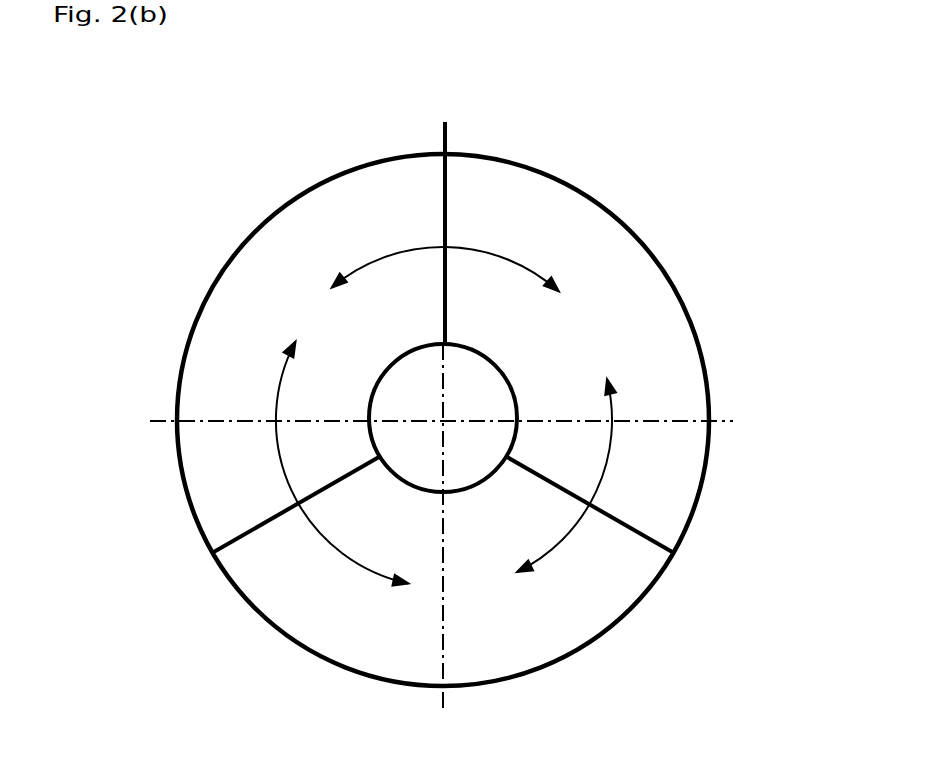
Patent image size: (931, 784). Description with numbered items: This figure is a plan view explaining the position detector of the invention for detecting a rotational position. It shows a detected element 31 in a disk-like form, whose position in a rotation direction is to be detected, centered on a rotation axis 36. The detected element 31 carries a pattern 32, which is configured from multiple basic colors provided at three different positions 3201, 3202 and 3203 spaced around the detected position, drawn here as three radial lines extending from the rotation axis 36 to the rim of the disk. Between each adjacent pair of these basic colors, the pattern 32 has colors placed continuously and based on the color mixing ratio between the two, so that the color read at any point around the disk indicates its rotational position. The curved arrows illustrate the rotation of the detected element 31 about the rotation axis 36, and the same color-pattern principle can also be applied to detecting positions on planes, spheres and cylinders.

The detected element 31 is at (707, 457).
The pattern 32 is at (667, 377).
The rotation axis 36 is at (512, 384).
The position of basic color 3201 is at (458, 140).
The position of basic color 3202 is at (682, 552).
The position of basic color 3203 is at (202, 555).